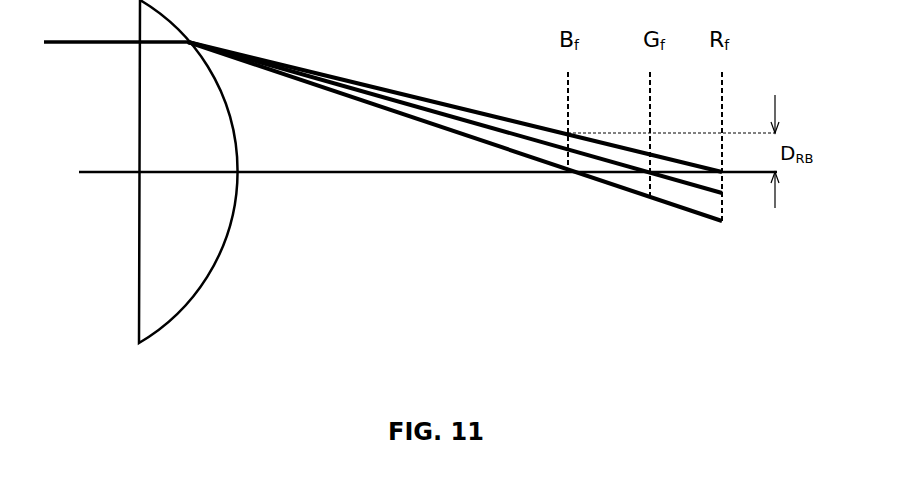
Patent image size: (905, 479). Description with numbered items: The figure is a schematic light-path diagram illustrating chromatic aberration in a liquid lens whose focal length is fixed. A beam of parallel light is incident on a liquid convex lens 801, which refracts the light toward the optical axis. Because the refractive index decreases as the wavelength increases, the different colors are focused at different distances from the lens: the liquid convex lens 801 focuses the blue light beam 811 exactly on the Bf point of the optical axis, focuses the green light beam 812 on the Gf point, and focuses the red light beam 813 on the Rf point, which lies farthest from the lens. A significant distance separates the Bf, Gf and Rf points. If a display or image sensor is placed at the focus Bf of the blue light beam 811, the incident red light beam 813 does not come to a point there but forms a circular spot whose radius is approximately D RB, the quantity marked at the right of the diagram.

The liquid convex lens 801 is at (218, 255).
The blue light beam 811 is at (608, 186).
The green light beam 812 is at (547, 144).
The red light beam 813 is at (512, 121).